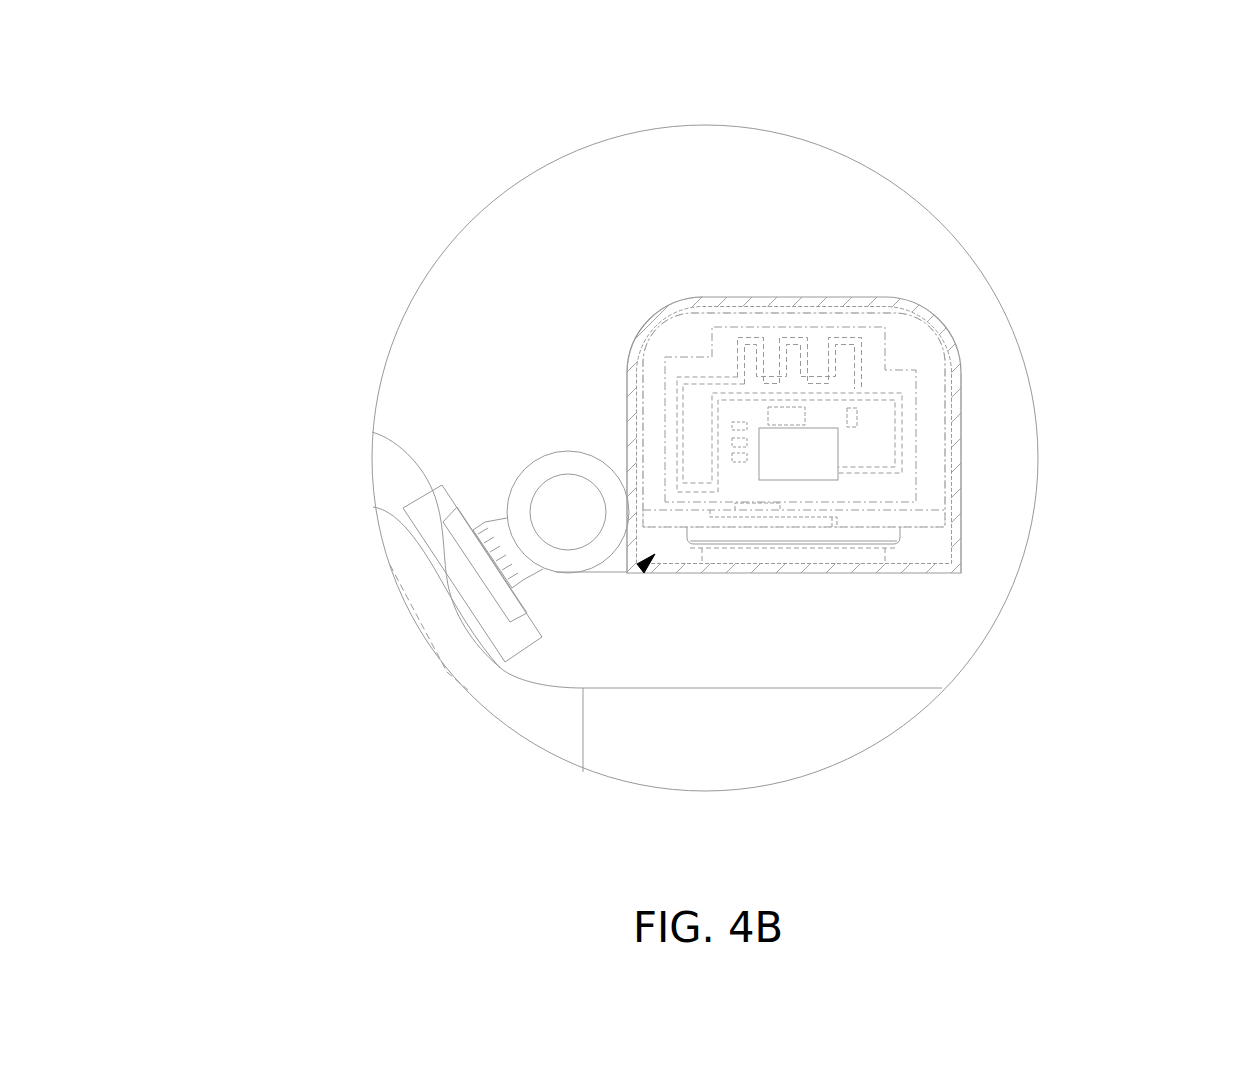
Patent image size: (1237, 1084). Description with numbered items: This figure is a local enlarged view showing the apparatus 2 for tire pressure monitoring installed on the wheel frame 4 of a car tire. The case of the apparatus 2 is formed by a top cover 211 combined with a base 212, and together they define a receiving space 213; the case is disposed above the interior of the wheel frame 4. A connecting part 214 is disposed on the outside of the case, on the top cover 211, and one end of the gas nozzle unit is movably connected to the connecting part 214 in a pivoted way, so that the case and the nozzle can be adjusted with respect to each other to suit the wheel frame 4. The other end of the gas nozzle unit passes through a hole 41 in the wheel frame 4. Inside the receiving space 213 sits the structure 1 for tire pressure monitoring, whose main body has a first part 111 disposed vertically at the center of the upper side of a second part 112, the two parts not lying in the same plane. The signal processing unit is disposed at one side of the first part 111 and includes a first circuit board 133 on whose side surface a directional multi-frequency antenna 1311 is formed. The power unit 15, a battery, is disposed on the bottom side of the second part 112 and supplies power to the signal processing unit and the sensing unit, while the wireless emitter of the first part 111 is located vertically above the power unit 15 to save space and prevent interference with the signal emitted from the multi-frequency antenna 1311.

The structure for tire pressure monitoring 1 is at (926, 338).
The first part 111 is at (924, 359).
The second part 112 is at (938, 522).
The first circuit board 133 is at (907, 337).
The multi-frequency antenna 1311 is at (787, 338).
The power unit 15 is at (847, 553).
The apparatus for tire pressure monitoring 2 is at (667, 298).
The top cover 211 is at (627, 362).
The base 212 is at (962, 558).
The receiving space 213 is at (645, 570).
The connecting part 214 is at (547, 451).
The wheel frame 4 is at (557, 723).
The hole 41 is at (445, 478).